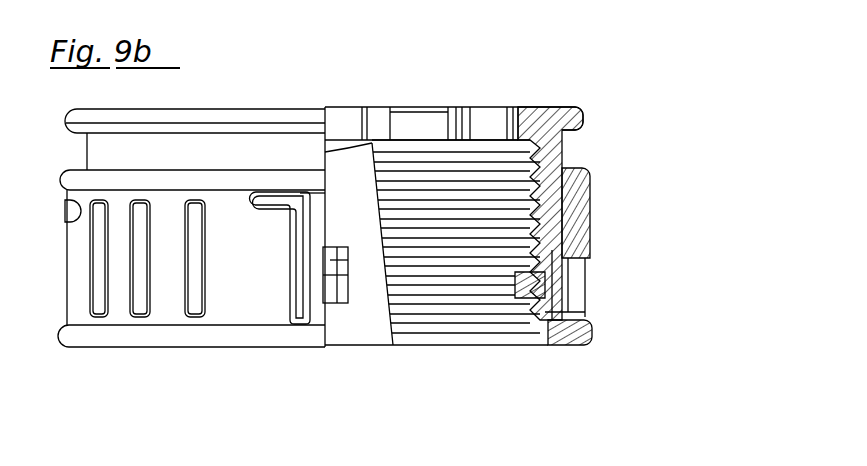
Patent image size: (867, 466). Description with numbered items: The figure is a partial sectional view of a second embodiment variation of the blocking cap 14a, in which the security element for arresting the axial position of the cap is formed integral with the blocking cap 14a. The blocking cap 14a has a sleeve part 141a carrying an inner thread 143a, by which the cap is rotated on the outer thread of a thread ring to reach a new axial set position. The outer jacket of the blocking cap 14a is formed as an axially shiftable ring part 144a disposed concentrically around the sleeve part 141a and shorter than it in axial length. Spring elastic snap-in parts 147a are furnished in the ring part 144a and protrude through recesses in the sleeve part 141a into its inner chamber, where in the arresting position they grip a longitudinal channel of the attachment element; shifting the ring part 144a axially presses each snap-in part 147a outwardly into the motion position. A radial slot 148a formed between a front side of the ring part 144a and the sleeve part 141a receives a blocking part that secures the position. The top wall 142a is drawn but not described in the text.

The blocking cap 14a is at (575, 87).
The sleeve part 141a is at (565, 150).
The top wall 142a is at (493, 120).
The inner thread 143a is at (492, 343).
The ring part 144a is at (592, 202).
The snap-in part 147a is at (62, 232).
The radial slot 148a is at (578, 137).